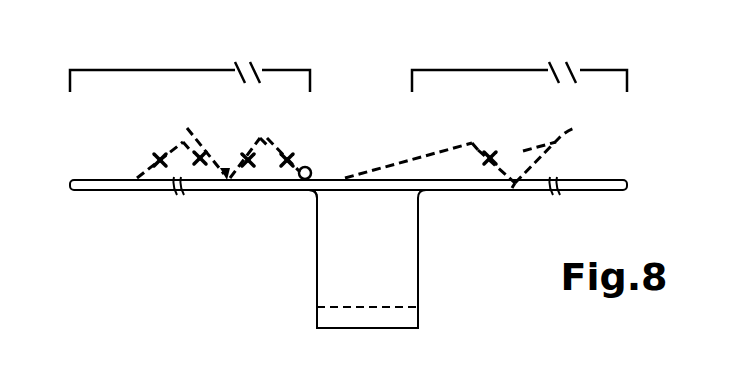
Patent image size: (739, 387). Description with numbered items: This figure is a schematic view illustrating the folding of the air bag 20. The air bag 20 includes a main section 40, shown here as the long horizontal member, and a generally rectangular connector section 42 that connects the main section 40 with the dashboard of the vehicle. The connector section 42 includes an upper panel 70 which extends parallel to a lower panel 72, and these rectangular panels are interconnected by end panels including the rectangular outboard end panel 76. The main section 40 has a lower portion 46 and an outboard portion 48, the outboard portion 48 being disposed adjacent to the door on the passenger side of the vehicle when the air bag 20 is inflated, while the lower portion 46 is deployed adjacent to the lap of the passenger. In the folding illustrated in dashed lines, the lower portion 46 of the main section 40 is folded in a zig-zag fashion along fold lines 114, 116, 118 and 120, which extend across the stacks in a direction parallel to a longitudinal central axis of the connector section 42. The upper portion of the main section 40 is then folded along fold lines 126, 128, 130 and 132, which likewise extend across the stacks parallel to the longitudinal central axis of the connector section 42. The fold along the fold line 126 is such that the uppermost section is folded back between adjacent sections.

The air bag 20 is at (118, 267).
The main section 40 is at (354, 96).
The connector section 42 is at (316, 273).
The lower portion 46 is at (165, 70).
The outboard portion 48 is at (483, 70).
The upper panel 70 is at (418, 262).
The lower panel 72 is at (315, 237).
The outboard end panel 76 is at (395, 280).
The fold line 114 is at (180, 140).
The fold line 116 is at (195, 141).
The fold line 118 is at (258, 136).
The fold line 120 is at (273, 190).
The fold line 126 is at (578, 128).
The fold line 128 is at (512, 188).
The fold line 130 is at (472, 143).
The fold line 132 is at (338, 178).